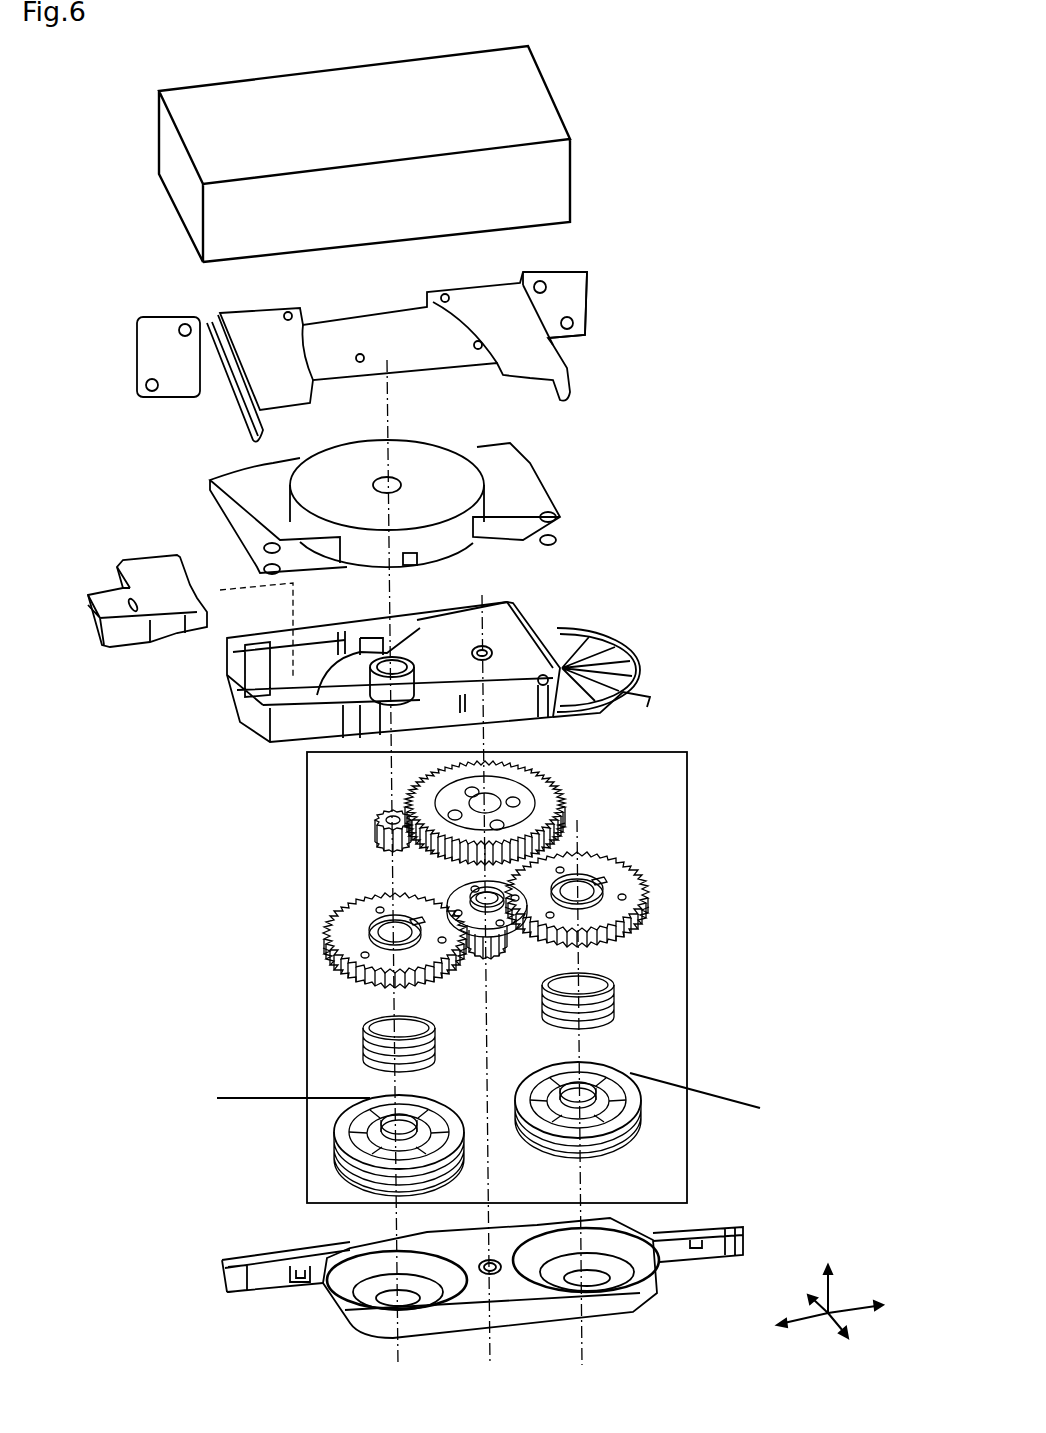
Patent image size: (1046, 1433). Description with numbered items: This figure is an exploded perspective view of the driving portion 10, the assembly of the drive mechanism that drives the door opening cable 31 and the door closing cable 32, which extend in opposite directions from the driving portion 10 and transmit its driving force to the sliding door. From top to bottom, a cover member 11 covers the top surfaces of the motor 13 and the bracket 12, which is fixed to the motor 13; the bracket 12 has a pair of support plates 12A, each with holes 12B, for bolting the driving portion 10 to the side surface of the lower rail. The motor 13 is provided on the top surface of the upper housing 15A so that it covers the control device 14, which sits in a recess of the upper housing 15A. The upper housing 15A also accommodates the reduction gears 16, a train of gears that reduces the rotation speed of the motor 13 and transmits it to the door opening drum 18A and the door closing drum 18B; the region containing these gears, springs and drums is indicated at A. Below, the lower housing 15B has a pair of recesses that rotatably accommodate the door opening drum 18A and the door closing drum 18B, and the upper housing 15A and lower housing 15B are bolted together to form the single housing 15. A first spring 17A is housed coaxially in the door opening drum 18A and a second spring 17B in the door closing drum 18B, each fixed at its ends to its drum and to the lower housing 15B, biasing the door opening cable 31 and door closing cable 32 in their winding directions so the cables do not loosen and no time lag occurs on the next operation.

The driving portion 10 is at (647, 126).
The cover member 11 is at (560, 173).
The bracket 12 is at (391, 336).
The support plate 12A is at (162, 330).
The hole 12B is at (150, 395).
The motor 13 is at (533, 487).
The control device 14 is at (111, 604).
The housing 15 is at (557, 970).
The upper housing 15A is at (620, 660).
The lower housing 15B is at (743, 1233).
The reduction gears 16 is at (707, 758).
The first spring 17A is at (367, 1055).
The second spring 17B is at (613, 1007).
The door opening drum 18A is at (337, 1150).
The door closing drum 18B is at (643, 1107).
The door opening cable 31 is at (225, 1096).
The door closing cable 32 is at (706, 1091).
The drive unit region A is at (300, 936).